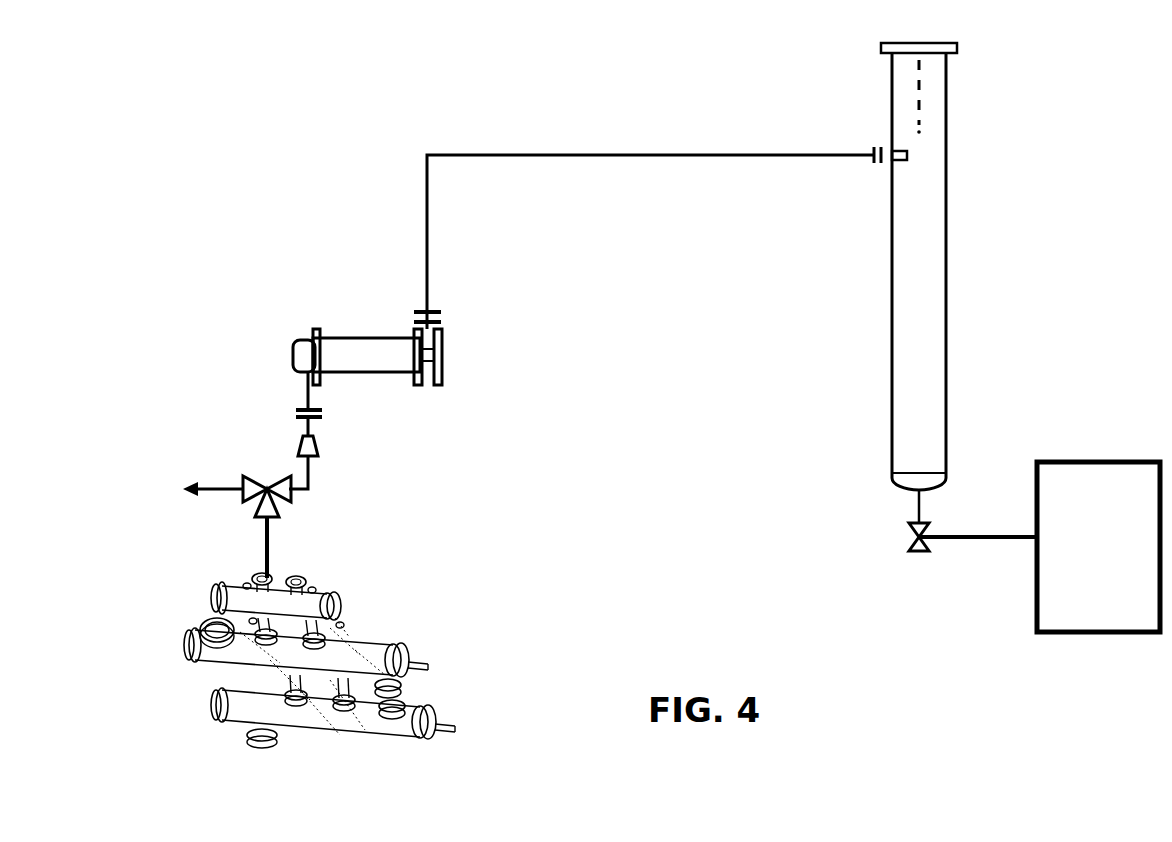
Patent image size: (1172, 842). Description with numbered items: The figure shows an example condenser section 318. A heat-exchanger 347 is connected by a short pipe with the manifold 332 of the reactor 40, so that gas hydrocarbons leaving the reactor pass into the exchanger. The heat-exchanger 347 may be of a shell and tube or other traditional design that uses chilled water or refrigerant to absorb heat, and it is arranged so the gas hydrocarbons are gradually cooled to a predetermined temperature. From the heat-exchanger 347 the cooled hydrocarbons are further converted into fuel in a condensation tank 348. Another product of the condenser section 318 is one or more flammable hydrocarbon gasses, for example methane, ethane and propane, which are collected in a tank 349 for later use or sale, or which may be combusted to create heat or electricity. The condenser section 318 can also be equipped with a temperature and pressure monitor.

The reactor 40 is at (168, 716).
The condenser section 318 is at (890, 671).
The manifold 332 is at (300, 604).
The heat-exchanger 347 is at (347, 348).
The condensation tank 348 is at (925, 233).
The tank 349 is at (1098, 547).